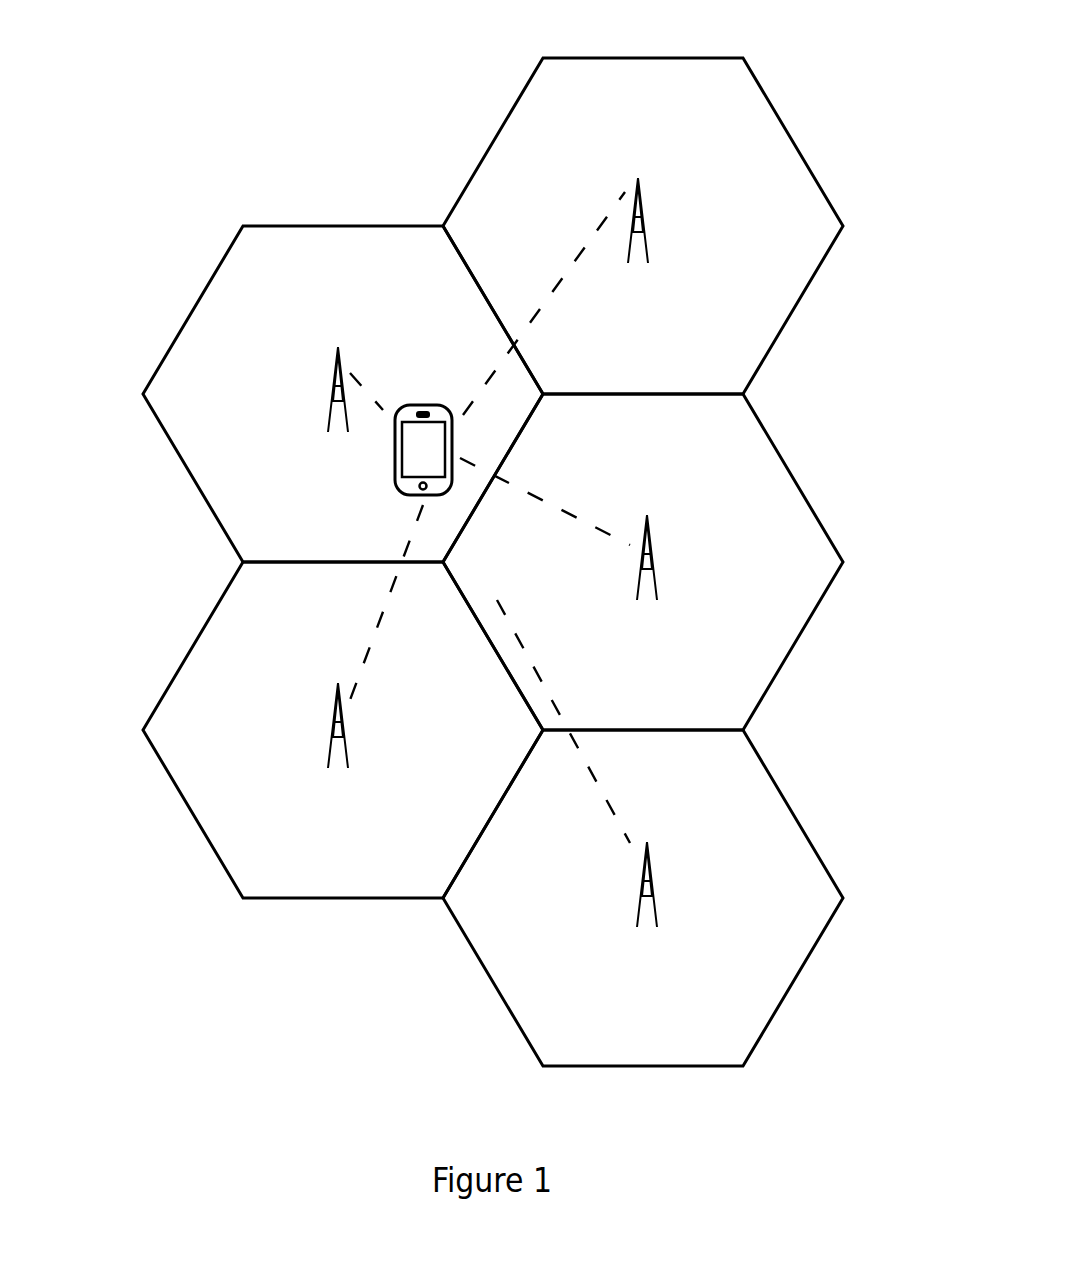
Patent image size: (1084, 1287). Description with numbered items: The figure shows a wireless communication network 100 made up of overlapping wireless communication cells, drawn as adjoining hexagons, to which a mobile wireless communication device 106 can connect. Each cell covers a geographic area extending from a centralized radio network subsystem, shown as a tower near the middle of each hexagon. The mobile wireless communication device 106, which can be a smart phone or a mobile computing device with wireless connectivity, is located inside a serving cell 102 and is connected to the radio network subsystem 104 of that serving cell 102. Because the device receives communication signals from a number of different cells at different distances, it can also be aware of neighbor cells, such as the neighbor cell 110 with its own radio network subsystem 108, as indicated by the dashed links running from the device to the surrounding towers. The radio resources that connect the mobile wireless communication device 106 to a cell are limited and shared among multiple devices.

The wireless communication network 100 is at (128, 92).
The serving cell 102 is at (218, 265).
The radio network subsystem 104 is at (348, 363).
The mobile wireless communication device 106 is at (393, 452).
The radio network subsystem 108 is at (658, 532).
The neighbor cell 110 is at (778, 447).